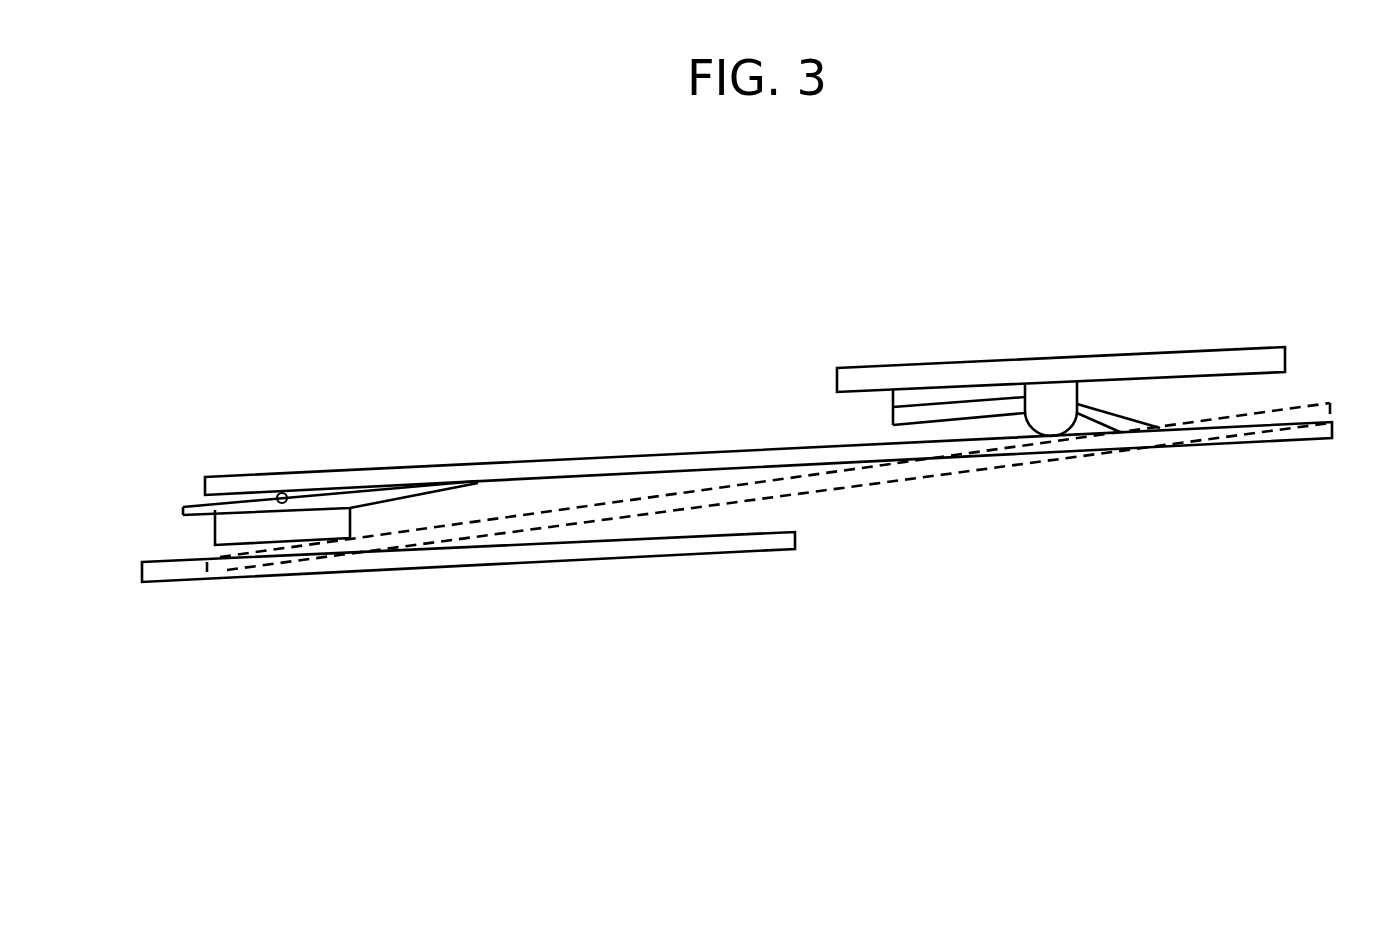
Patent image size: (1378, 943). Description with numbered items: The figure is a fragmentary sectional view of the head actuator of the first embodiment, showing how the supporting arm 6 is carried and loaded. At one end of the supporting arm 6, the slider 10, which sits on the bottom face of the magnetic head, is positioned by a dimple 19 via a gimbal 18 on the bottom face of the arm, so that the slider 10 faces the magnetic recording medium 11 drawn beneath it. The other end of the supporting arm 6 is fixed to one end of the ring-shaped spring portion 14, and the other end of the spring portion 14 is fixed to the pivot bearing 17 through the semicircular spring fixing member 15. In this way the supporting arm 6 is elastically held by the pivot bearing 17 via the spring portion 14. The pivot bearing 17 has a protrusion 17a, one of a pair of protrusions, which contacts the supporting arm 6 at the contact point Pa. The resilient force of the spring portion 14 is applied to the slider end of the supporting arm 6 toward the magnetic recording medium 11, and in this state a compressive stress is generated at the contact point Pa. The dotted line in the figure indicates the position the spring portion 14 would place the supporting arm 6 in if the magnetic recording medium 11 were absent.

The supporting arm 6 is at (403, 477).
The slider 10 is at (228, 532).
The magnetic recording medium 11 is at (587, 547).
The spring portion 14 is at (1098, 415).
The spring fixing member 15 is at (948, 395).
The pivot bearing 17 is at (1240, 365).
The protrusion 17a is at (1048, 413).
The gimbal 18 is at (196, 506).
The dimple 19 is at (280, 492).
The contact point Pa is at (1050, 437).